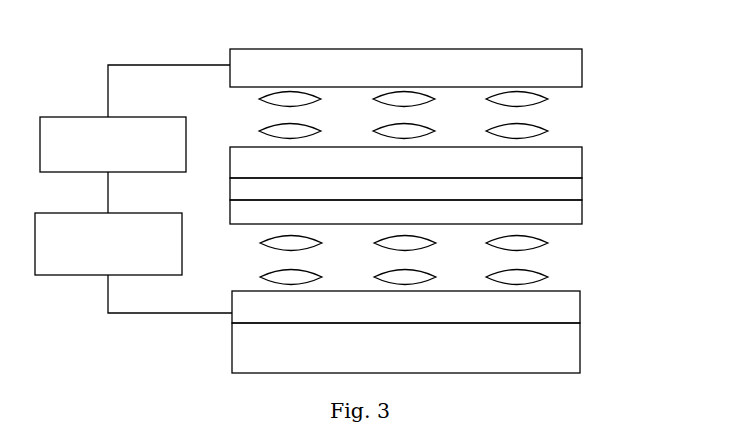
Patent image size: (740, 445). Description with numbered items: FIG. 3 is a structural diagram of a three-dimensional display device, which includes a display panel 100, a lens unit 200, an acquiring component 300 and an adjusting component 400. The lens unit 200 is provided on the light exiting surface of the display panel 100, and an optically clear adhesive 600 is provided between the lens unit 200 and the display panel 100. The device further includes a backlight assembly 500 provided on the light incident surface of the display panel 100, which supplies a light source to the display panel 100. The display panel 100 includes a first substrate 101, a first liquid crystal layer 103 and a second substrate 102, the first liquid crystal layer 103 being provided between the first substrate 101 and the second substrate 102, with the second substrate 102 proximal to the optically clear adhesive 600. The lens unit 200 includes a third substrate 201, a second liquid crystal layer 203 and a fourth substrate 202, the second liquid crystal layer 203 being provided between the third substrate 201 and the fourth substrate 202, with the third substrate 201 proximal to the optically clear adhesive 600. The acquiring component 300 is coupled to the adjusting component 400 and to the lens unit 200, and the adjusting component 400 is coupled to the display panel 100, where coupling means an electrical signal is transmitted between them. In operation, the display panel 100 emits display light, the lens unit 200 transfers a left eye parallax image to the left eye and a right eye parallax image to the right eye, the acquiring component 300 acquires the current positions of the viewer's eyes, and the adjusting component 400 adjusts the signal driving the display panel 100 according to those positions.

The acquiring component 300 is at (56, 138).
The adjusting component 400 is at (56, 262).
The backlight assembly 500 is at (283, 352).
The lens unit 200 is at (458, 113).
The fourth substrate 202 is at (558, 62).
The second liquid crystal layer 203 is at (545, 112).
The third substrate 201 is at (434, 159).
The optically clear adhesive 600 is at (550, 189).
The display panel 100 is at (458, 261).
The second substrate 102 is at (548, 222).
The first liquid crystal layer 103 is at (540, 261).
The first substrate 101 is at (435, 307).